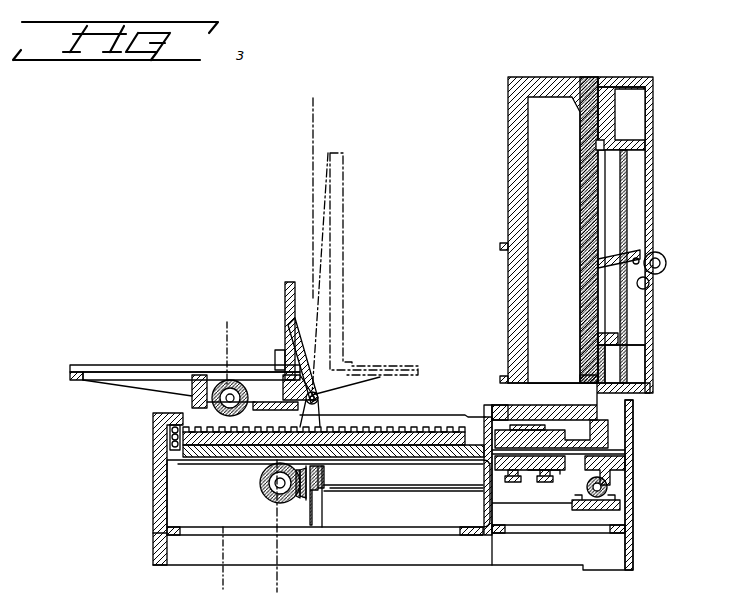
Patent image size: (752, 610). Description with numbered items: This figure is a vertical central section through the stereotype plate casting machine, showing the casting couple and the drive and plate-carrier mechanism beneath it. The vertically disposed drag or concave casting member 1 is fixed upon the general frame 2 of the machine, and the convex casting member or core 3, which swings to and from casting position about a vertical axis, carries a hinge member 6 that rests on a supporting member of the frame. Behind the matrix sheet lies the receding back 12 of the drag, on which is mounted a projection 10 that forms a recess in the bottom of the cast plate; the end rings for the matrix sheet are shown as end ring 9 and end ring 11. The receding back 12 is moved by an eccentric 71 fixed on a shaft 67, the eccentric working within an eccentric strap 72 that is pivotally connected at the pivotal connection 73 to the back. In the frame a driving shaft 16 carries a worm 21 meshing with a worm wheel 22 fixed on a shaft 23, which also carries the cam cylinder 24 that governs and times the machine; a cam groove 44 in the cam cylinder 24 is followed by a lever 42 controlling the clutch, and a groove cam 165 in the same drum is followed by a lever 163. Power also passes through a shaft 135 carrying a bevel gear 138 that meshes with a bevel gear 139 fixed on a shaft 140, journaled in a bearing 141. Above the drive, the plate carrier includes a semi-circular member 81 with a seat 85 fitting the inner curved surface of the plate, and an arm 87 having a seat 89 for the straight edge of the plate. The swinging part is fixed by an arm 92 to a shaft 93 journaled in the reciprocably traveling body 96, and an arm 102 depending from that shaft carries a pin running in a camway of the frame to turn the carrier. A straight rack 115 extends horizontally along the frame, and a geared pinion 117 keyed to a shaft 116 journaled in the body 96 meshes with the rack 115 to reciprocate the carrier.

The drag or concave casting member 1 is at (617, 77).
The general frame 2 is at (630, 495).
The convex casting member or core 3 is at (508, 190).
The hinge member 6 is at (308, 111).
The end ring 9 is at (598, 146).
The projection 10 is at (600, 375).
The end ring 11 is at (600, 340).
The receding back 12 is at (628, 200).
The driving shaft 16 is at (592, 510).
The worm 21 is at (610, 480).
The worm wheel 22 is at (610, 425).
The shaft 23 is at (628, 450).
The cam cylinder 24 is at (532, 470).
The lever 42 is at (548, 482).
The cam groove 44 is at (538, 395).
The shaft 67 is at (664, 262).
The eccentric 71 is at (638, 252).
The eccentric strap 72 is at (650, 282).
The pivotal connection 73 is at (638, 258).
The semi-circular member 81 is at (285, 290).
The projection or seat 85 is at (278, 350).
The arm 87 is at (138, 372).
The seat 89 is at (101, 365).
The arm 92 is at (320, 402).
The shaft 93 is at (340, 400).
The reciprocably traveling body 96 is at (190, 394).
The arm 102 is at (360, 420).
The straight rack 115 is at (440, 415).
The shaft 116 is at (256, 400).
The geared pinion 117 is at (222, 380).
The shaft 135 is at (264, 492).
The bevel gear 138 is at (260, 480).
The bevel gear 139 is at (298, 500).
The shaft 140 is at (385, 485).
The bearing 141 is at (322, 500).
The lever 163 is at (520, 482).
The groove cam 165 is at (510, 405).